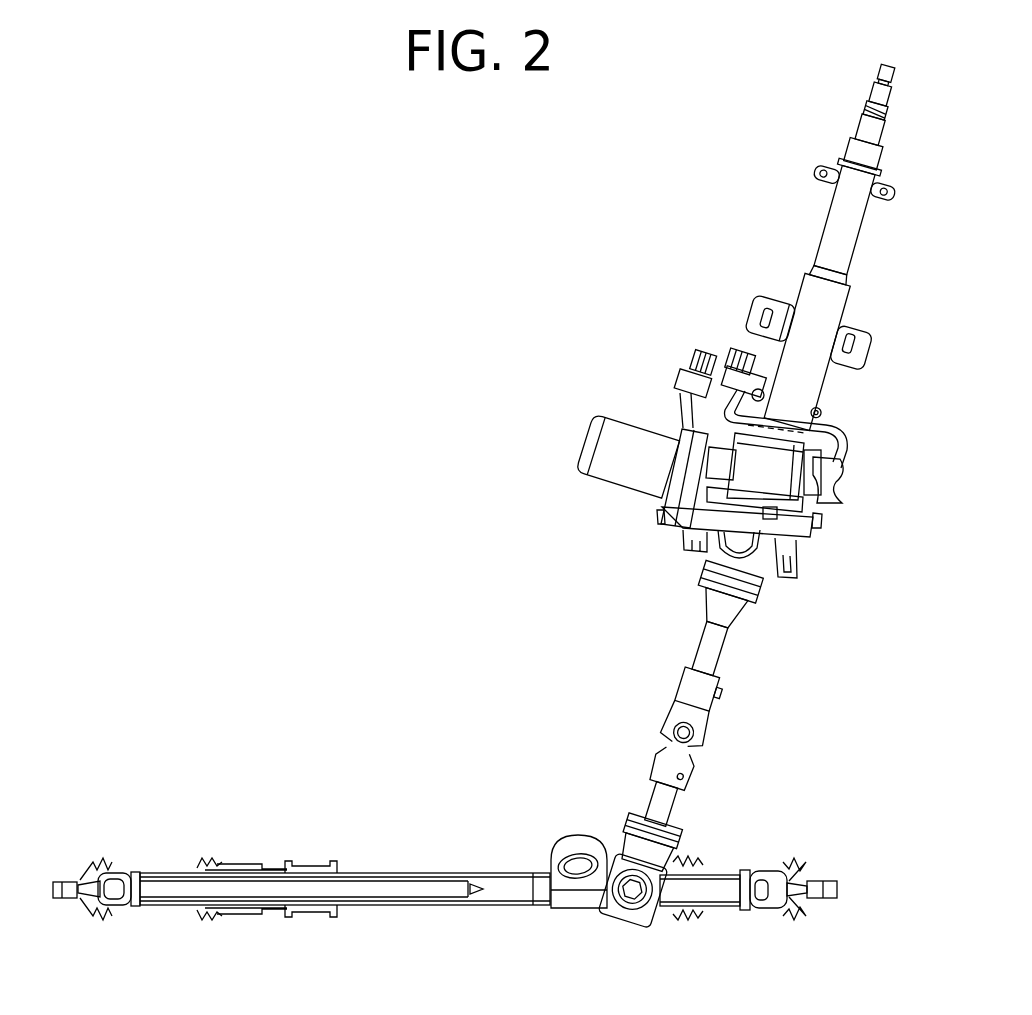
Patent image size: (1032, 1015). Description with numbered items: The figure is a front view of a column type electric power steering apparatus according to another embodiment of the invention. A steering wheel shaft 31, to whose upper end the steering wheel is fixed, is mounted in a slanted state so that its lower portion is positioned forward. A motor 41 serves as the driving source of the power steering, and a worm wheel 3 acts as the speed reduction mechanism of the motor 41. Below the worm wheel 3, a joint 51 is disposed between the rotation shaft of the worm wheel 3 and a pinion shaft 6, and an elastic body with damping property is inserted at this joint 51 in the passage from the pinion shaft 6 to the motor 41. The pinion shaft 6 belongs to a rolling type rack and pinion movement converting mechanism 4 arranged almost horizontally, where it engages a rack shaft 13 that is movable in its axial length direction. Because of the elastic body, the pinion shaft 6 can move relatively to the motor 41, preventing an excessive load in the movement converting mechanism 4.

The steering wheel shaft 31 is at (882, 70).
The motor 41 is at (610, 430).
The worm wheel 3 is at (805, 528).
The joint 51 is at (693, 590).
The pinion shaft 6 is at (673, 813).
The rack shaft 13 is at (388, 890).
The rack and pinion movement converting mechanism 4 is at (647, 917).